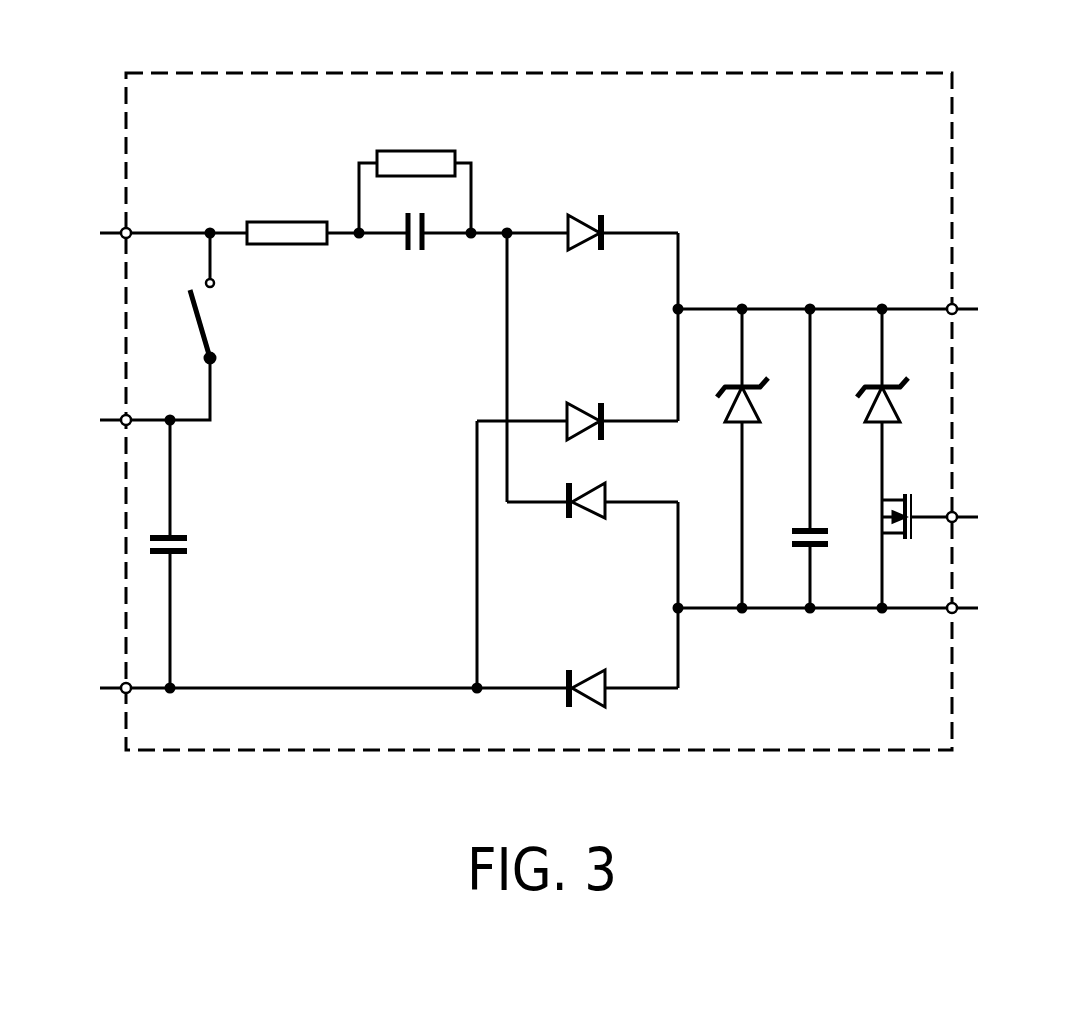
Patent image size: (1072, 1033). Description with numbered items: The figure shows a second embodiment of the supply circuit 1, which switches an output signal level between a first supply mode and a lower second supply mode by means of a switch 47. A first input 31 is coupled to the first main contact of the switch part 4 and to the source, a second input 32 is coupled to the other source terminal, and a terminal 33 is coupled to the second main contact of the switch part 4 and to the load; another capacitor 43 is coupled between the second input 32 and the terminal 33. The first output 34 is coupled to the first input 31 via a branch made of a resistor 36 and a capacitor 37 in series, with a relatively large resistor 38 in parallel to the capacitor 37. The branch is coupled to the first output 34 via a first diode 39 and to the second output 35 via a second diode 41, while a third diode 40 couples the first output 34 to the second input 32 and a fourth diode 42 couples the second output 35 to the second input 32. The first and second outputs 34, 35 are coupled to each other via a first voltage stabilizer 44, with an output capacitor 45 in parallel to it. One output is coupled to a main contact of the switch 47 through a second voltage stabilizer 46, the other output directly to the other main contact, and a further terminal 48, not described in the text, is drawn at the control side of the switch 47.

The supply circuit 1 is at (866, 755).
The switch part 4 is at (200, 324).
The first input 31 is at (122, 240).
The second input 32 is at (122, 695).
The terminal 33 is at (122, 427).
The first output 34 is at (957, 315).
The second output 35 is at (957, 614).
The resistor 36 is at (285, 247).
The capacitor 37 is at (410, 253).
The resistor 38 is at (418, 150).
The first diode 39 is at (606, 231).
The third diode 40 is at (606, 418).
The second diode 41 is at (606, 489).
The fourth diode 42 is at (606, 676).
The capacitor 43 is at (190, 545).
The first voltage stabilizer 44 is at (736, 384).
The output capacitor 45 is at (805, 528).
The second voltage stabilizer 46 is at (876, 384).
The switch 47 is at (899, 500).
The control terminal 48 is at (957, 523).